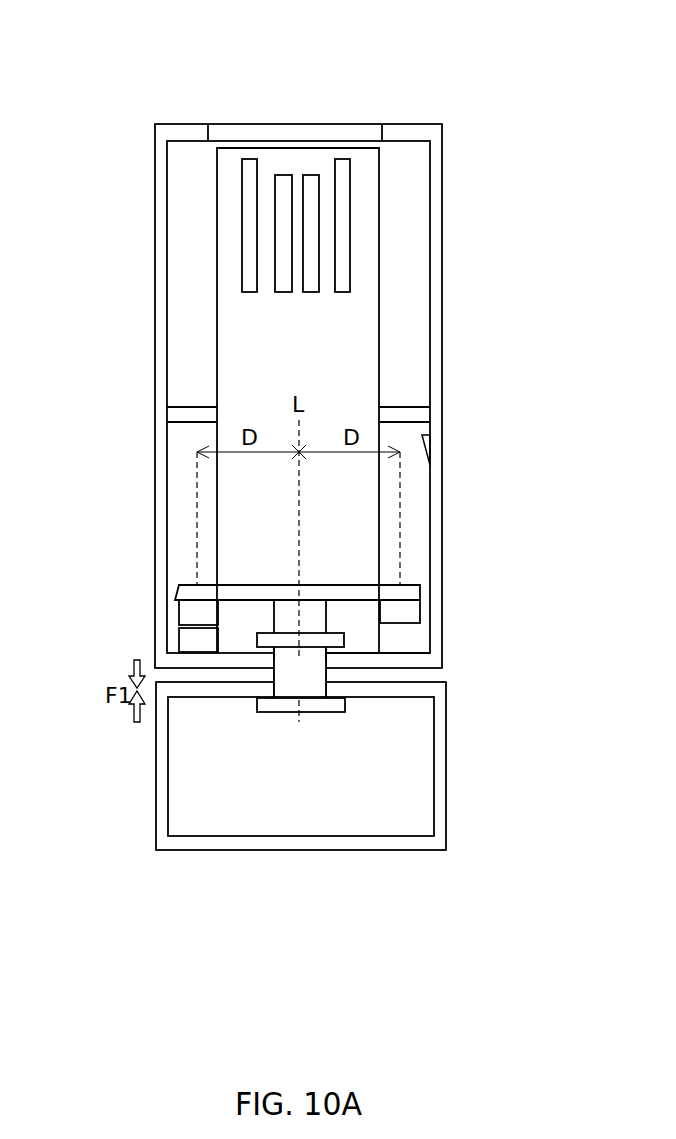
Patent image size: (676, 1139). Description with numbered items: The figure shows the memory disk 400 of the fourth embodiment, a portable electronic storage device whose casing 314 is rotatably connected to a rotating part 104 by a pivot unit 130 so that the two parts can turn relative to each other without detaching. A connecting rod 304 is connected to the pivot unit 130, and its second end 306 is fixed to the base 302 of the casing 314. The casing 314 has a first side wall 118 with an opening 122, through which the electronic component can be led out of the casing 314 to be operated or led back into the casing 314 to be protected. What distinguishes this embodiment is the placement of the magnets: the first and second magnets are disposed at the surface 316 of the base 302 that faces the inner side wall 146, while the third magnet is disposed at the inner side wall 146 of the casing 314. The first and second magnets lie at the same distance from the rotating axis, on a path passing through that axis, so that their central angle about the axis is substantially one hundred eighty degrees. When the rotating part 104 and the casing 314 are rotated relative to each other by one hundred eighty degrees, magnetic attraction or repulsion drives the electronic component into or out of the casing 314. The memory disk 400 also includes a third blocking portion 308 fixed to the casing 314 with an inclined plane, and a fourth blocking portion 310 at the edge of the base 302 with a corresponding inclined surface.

The memory disk 400 is at (130, 41).
The first side wall 118 is at (420, 132).
The opening 122 is at (352, 126).
The casing 314 is at (438, 179).
The third blocking portion 308 is at (427, 443).
The base 302 is at (193, 592).
The fourth blocking portion 310 is at (164, 592).
The second end 306 is at (315, 584).
The connecting rod 304 is at (307, 628).
The inner side wall 146 is at (367, 645).
The rotating part 104 is at (447, 755).
The pivot unit 130 is at (325, 712).
The surface 316 is at (244, 612).